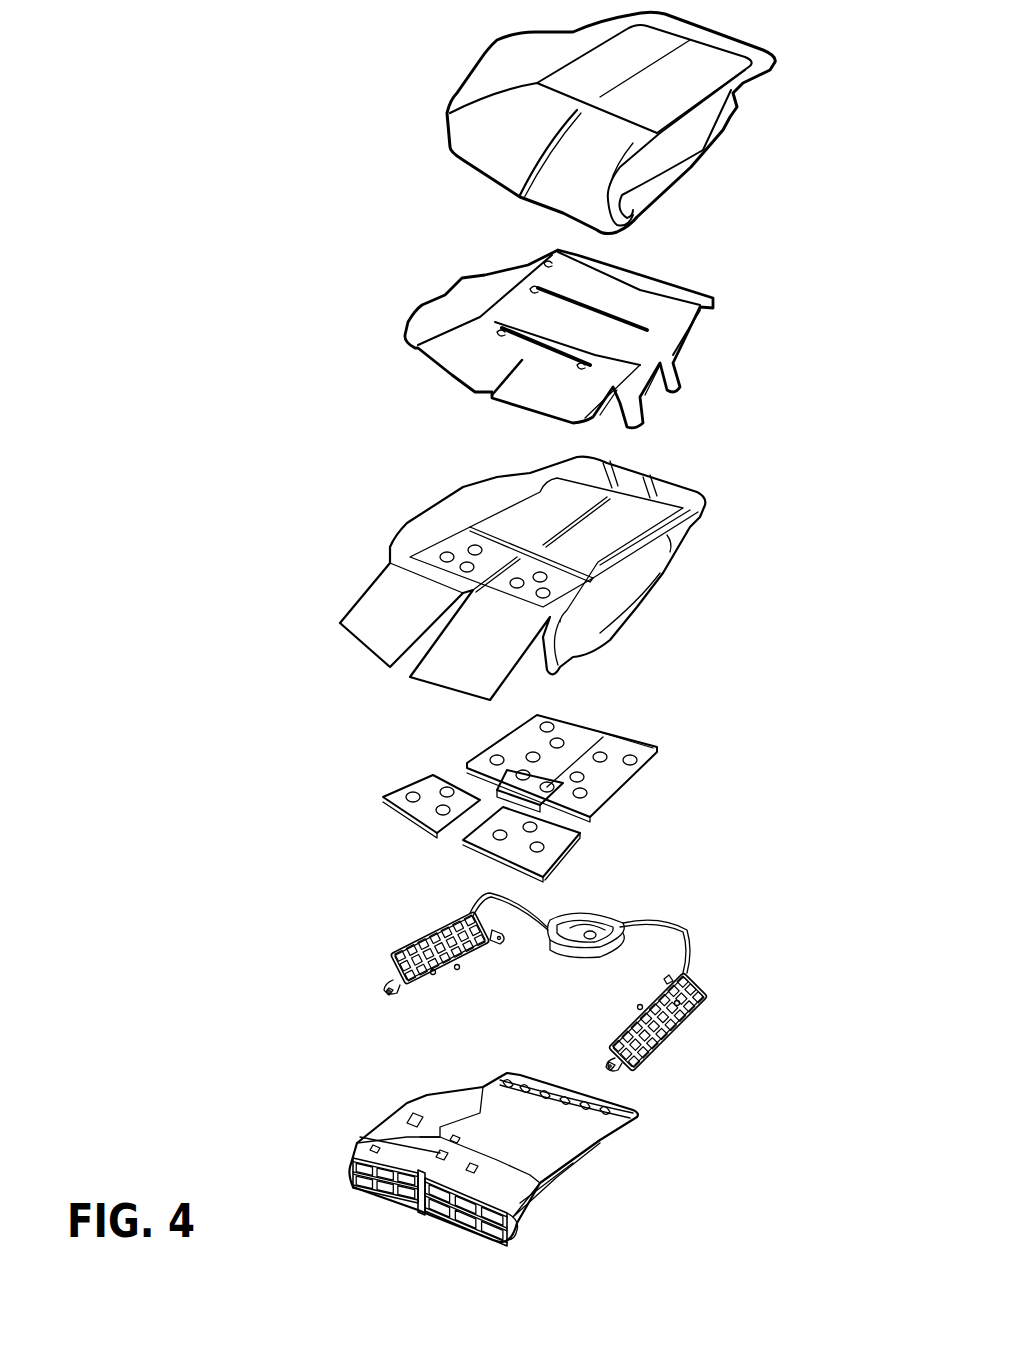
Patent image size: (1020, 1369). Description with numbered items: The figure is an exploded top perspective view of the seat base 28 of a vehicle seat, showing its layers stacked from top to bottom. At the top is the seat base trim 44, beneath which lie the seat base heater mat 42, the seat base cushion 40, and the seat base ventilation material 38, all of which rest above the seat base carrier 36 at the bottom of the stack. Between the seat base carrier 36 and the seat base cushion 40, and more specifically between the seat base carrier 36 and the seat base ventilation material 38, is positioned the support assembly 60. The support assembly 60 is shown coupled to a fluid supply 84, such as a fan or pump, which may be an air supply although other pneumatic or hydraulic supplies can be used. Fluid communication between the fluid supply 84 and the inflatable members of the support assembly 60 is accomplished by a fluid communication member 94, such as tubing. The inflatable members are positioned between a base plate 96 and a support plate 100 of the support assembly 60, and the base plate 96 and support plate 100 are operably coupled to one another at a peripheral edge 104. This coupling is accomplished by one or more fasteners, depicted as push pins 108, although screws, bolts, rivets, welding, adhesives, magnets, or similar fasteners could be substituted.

The seat base 28 is at (287, 333).
The seat base carrier 36 is at (557, 1193).
The seat base ventilation material 38 is at (622, 776).
The seat base cushion 40 is at (437, 522).
The seat base heater mat 42 is at (467, 300).
The seat base trim 44 is at (497, 72).
The support assembly 60 is at (713, 977).
The fluid supply 84 is at (563, 947).
The fluid communication member 94 is at (527, 905).
The base plate 96 is at (390, 977).
The support plate 100 is at (437, 937).
The peripheral edge 104 is at (457, 967).
The push pins 108 is at (477, 907).